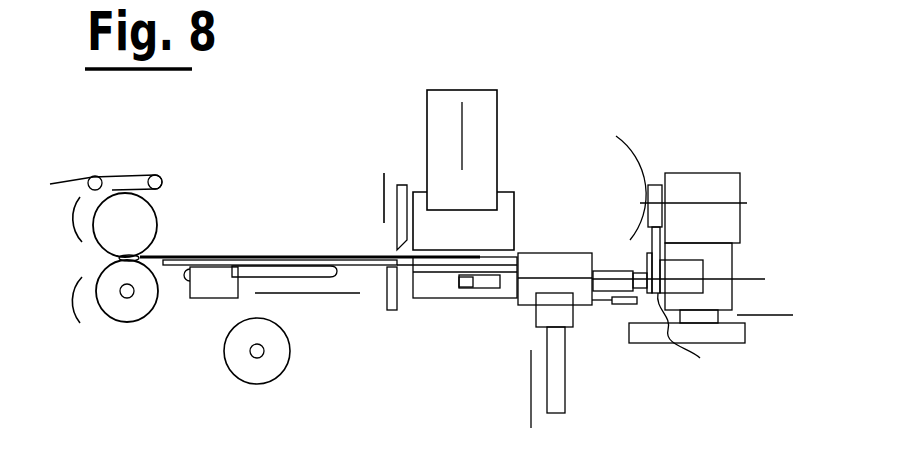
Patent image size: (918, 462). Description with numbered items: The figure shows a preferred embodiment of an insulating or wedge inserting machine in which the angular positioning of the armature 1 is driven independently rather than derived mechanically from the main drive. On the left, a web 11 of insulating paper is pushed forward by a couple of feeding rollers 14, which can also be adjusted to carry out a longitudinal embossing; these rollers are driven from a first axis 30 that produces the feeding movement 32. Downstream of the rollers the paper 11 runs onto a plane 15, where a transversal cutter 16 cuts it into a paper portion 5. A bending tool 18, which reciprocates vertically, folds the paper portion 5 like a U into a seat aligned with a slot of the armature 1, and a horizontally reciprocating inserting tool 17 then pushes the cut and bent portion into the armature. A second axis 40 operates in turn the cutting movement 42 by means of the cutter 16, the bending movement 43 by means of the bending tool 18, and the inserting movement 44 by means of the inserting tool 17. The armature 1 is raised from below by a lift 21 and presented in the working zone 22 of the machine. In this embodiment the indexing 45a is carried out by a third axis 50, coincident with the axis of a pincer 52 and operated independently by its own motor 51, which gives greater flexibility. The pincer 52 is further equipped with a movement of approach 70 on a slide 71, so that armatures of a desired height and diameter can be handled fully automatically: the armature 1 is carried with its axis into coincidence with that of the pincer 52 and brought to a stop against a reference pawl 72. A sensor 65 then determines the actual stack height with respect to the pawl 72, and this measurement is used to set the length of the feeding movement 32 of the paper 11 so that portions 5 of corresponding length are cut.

The armature 1 is at (580, 293).
The paper portion 5 is at (430, 250).
The web of insulating paper 11 is at (213, 253).
The feeding rollers 14 is at (112, 232).
The plane 15 is at (257, 257).
The transversal cutter 16 is at (405, 182).
The inserting tool 17 is at (305, 257).
The bending tool 18 is at (477, 230).
The lift 21 is at (550, 312).
The working zone 22 is at (688, 147).
The first axis 30 is at (127, 300).
The feeding movement 32 is at (78, 307).
The second axis 40 is at (253, 355).
The cutting movement 42 is at (384, 198).
The bending movement 43 is at (462, 137).
The inserting movement 44 is at (310, 295).
The indexing 45a is at (645, 235).
The third axis 50 is at (752, 277).
The motor 51 is at (732, 190).
The pincer 52 is at (683, 268).
The sensor 65 is at (627, 307).
The movement of approach 70 is at (765, 320).
The slide 71 is at (710, 337).
The reference pawl 72 is at (510, 262).